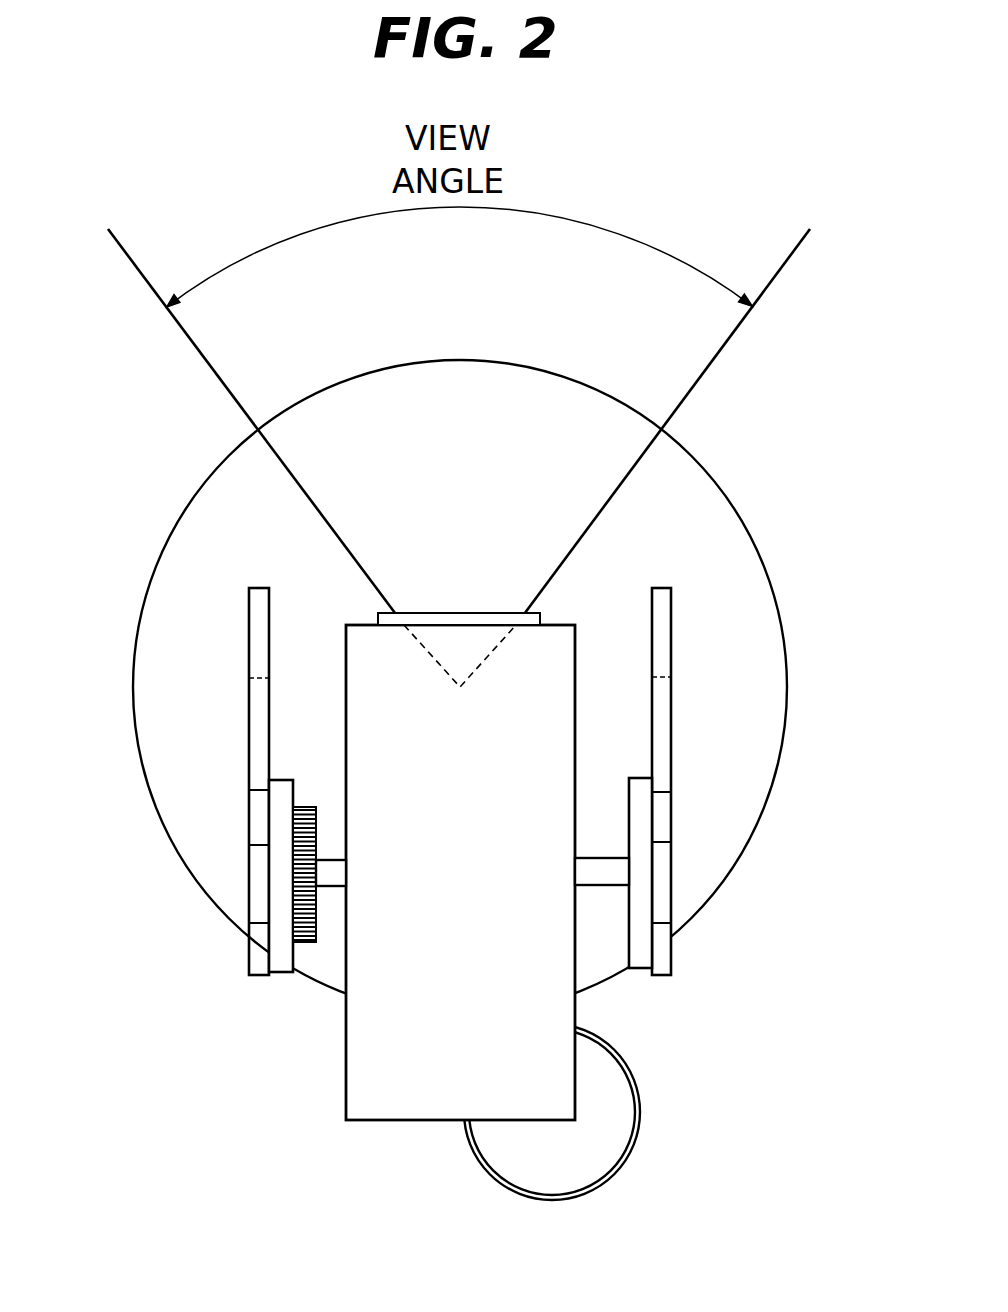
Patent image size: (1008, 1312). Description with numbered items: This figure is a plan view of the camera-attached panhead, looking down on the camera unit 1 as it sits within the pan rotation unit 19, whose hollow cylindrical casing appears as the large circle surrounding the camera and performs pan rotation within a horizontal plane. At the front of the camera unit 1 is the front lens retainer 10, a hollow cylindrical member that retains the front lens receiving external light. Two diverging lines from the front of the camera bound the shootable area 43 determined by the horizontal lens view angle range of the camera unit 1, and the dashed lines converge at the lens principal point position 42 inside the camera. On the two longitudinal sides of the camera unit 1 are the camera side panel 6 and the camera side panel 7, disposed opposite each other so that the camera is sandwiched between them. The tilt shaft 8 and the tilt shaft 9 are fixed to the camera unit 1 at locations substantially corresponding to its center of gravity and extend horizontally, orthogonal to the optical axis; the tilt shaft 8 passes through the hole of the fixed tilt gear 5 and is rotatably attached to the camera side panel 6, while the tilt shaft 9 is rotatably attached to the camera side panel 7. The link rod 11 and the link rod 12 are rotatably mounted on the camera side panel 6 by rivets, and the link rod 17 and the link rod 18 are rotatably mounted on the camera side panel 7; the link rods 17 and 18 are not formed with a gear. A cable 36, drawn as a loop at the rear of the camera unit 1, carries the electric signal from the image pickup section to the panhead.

The camera unit 1 is at (385, 1120).
The fixed tilt gear 5 is at (302, 948).
The camera side panel 6 is at (283, 958).
The camera side panel 7 is at (640, 948).
The tilt shaft 8 is at (334, 872).
The tilt shaft 9 is at (600, 873).
The front lens retainer 10 is at (541, 614).
The link rod 11 is at (262, 948).
The link rod 12 is at (258, 627).
The link rod 17 is at (662, 958).
The link rod 18 is at (660, 627).
The pan rotation unit 19 is at (775, 778).
The cable 36 is at (512, 1190).
The lens principal point position 42 is at (460, 690).
The shootable area 43 is at (480, 308).